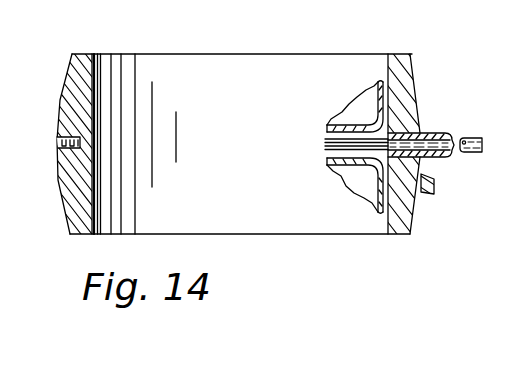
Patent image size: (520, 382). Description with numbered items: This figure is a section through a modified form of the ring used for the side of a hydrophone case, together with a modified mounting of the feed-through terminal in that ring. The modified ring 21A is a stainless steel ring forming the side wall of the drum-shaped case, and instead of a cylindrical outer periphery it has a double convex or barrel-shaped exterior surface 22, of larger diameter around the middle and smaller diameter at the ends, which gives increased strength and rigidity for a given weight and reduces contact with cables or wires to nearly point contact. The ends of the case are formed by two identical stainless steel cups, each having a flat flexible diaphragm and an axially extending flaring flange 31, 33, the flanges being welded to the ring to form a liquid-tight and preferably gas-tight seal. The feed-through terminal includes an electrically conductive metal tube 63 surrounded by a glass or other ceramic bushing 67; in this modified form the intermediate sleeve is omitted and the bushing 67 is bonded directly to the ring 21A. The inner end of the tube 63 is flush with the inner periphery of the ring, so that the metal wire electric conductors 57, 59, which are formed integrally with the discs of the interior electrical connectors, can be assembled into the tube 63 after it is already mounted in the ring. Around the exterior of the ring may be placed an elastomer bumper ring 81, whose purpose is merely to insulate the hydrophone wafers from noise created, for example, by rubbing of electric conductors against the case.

The double convex exterior surface 22 is at (412, 80).
The modified ring 21A is at (400, 212).
The flaring flange 31 is at (363, 92).
The flaring flange 33 is at (366, 189).
The electric conductor 57 is at (325, 139).
The electric conductor 59 is at (330, 150).
The bushing 67 is at (432, 133).
The tube 63 is at (478, 138).
The bumper ring 81 is at (438, 181).